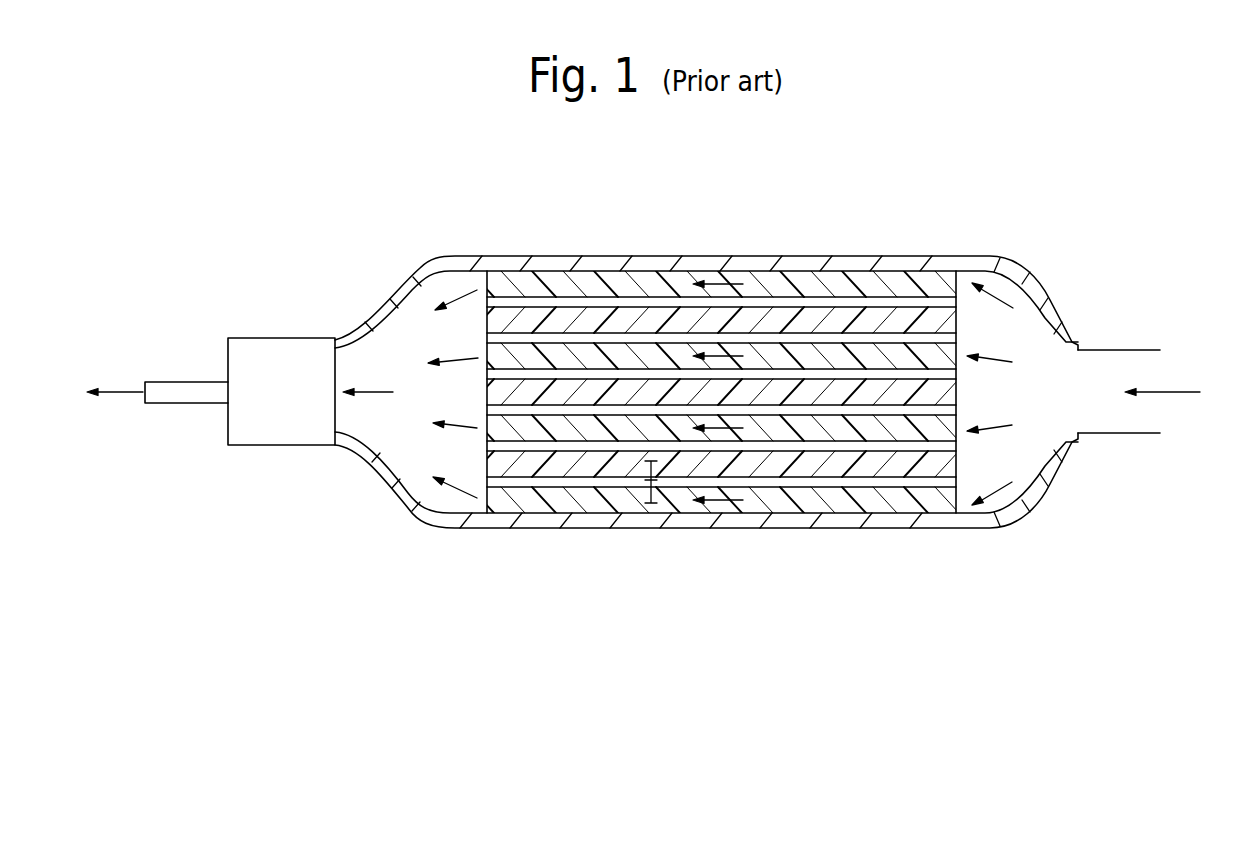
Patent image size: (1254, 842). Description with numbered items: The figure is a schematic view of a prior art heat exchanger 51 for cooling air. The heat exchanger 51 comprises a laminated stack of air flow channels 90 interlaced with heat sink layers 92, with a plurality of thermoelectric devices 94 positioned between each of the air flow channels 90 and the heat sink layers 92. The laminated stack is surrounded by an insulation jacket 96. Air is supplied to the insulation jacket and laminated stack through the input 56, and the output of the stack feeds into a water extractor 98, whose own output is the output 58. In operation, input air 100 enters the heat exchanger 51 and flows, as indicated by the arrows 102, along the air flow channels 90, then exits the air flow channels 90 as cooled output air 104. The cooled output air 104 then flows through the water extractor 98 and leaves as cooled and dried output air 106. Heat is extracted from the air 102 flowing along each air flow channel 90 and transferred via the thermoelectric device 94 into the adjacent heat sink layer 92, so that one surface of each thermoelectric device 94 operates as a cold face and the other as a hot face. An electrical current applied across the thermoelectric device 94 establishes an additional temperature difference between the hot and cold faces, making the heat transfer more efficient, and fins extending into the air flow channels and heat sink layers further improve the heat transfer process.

The heat exchanger 51 is at (945, 221).
The input 56 is at (1118, 348).
The output 58 is at (183, 381).
The air flow channel 90 is at (545, 355).
The heat sink layer 92 is at (619, 322).
The thermoelectric device 94 is at (866, 377).
The insulation jacket 96 is at (463, 256).
The water extractor 98 is at (273, 422).
The input air 100 is at (995, 292).
The air flow along the air flow channels 102 is at (727, 356).
The cooled output air 104 is at (373, 390).
The cooled and dried output air 106 is at (118, 393).